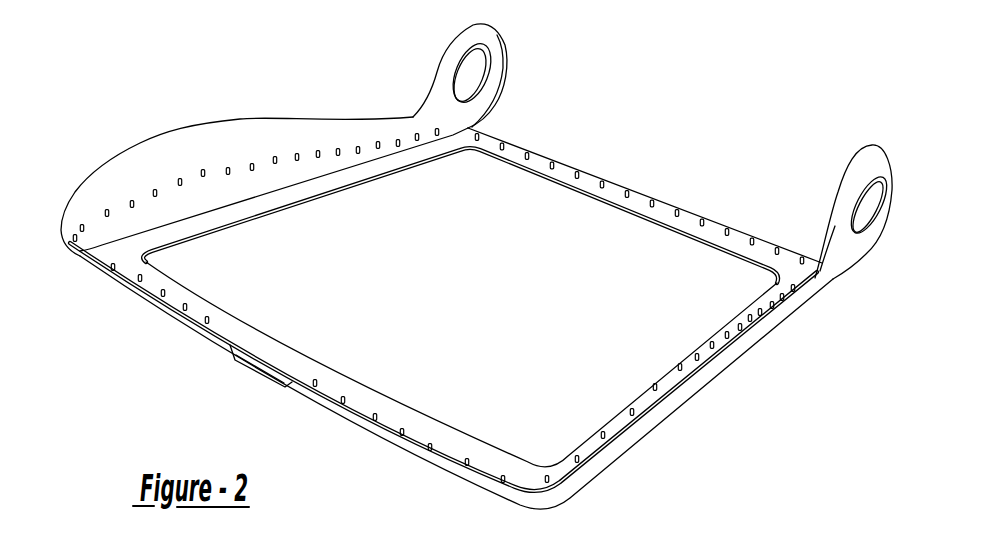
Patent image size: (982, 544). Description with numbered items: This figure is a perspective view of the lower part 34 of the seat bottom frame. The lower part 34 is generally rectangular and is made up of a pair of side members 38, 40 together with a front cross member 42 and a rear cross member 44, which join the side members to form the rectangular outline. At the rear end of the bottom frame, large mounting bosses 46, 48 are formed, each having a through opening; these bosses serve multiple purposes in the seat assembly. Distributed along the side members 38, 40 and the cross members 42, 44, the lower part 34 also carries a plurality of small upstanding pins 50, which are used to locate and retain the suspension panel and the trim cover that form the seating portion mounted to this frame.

The lower part 34 is at (477, 263).
The side member 38 is at (245, 117).
The side member 40 is at (750, 346).
The front cross member 42 is at (300, 350).
The rear cross member 44 is at (633, 190).
The mounting boss 46 is at (507, 50).
The mounting boss 48 is at (868, 146).
The upstanding pins 50 is at (518, 155).